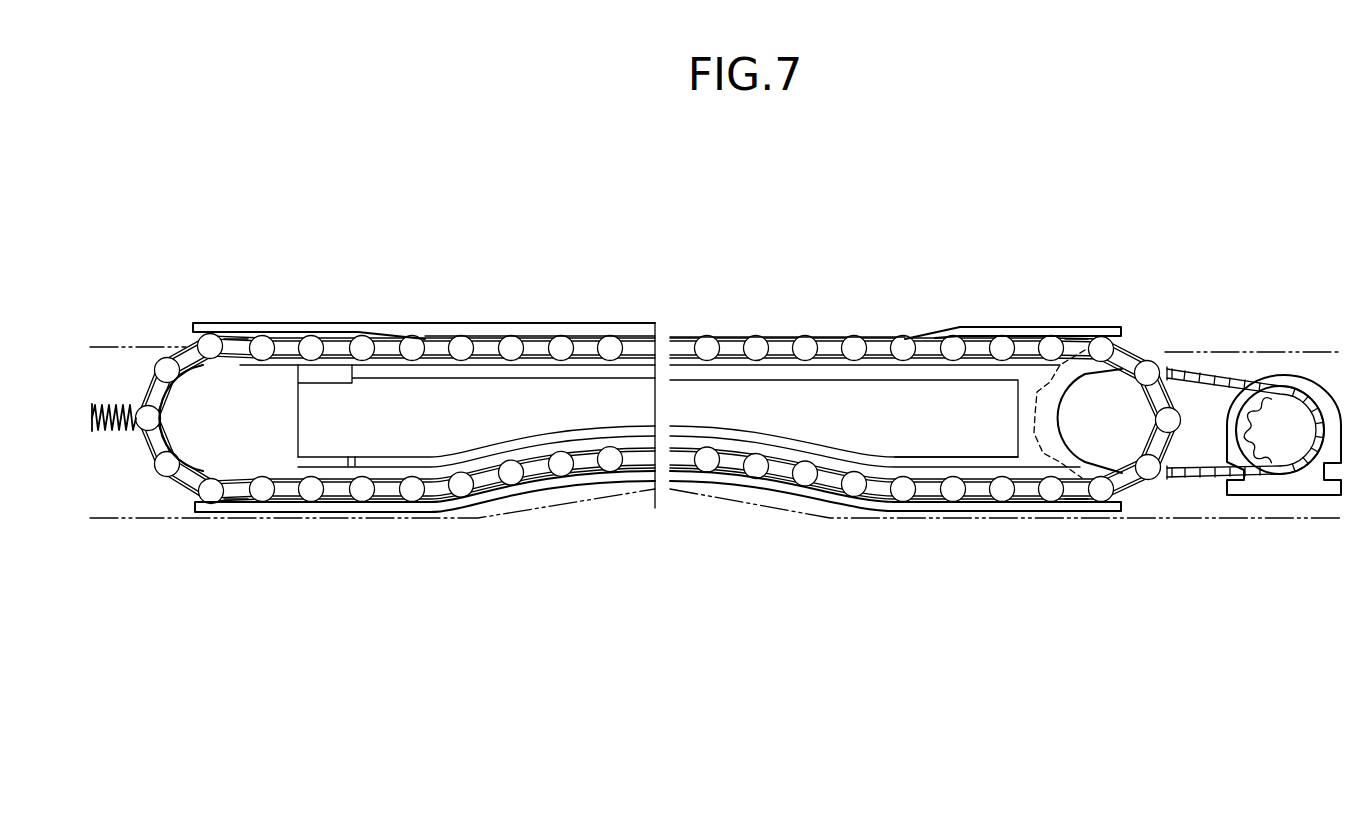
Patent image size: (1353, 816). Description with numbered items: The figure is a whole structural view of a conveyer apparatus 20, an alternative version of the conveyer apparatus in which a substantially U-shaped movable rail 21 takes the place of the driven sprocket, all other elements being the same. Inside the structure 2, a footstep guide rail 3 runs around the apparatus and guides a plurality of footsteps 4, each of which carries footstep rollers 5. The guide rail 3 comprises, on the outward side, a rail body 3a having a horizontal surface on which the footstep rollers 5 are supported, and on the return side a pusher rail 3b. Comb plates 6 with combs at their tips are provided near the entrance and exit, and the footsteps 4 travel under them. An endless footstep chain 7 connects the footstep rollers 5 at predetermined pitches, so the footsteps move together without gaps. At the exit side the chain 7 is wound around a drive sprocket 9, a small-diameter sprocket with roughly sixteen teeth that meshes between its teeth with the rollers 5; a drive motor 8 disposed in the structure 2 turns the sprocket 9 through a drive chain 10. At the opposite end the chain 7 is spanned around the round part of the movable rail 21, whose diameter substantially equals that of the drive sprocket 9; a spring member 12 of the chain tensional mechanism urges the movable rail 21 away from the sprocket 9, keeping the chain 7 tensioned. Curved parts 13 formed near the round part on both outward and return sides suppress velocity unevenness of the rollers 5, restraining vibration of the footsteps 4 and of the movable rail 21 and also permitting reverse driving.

The conveyer apparatus 20 is at (933, 200).
The footstep guide rail 3 is at (558, 245).
The rail body 3a is at (536, 365).
The pusher rail 3b is at (480, 500).
The footstep 4 is at (735, 341).
The footstep roller 5 is at (609, 344).
The comb plate 6 is at (302, 323).
The footstep chain 7 is at (684, 336).
The curved part (raised bump) 13 is at (230, 346).
The movable rail 21 is at (213, 452).
The spring member 12 is at (122, 430).
The drive sprocket 9 is at (1122, 462).
The structure 2 is at (1228, 369).
The drive chain 10 is at (1215, 471).
The drive motor 8 is at (1295, 376).